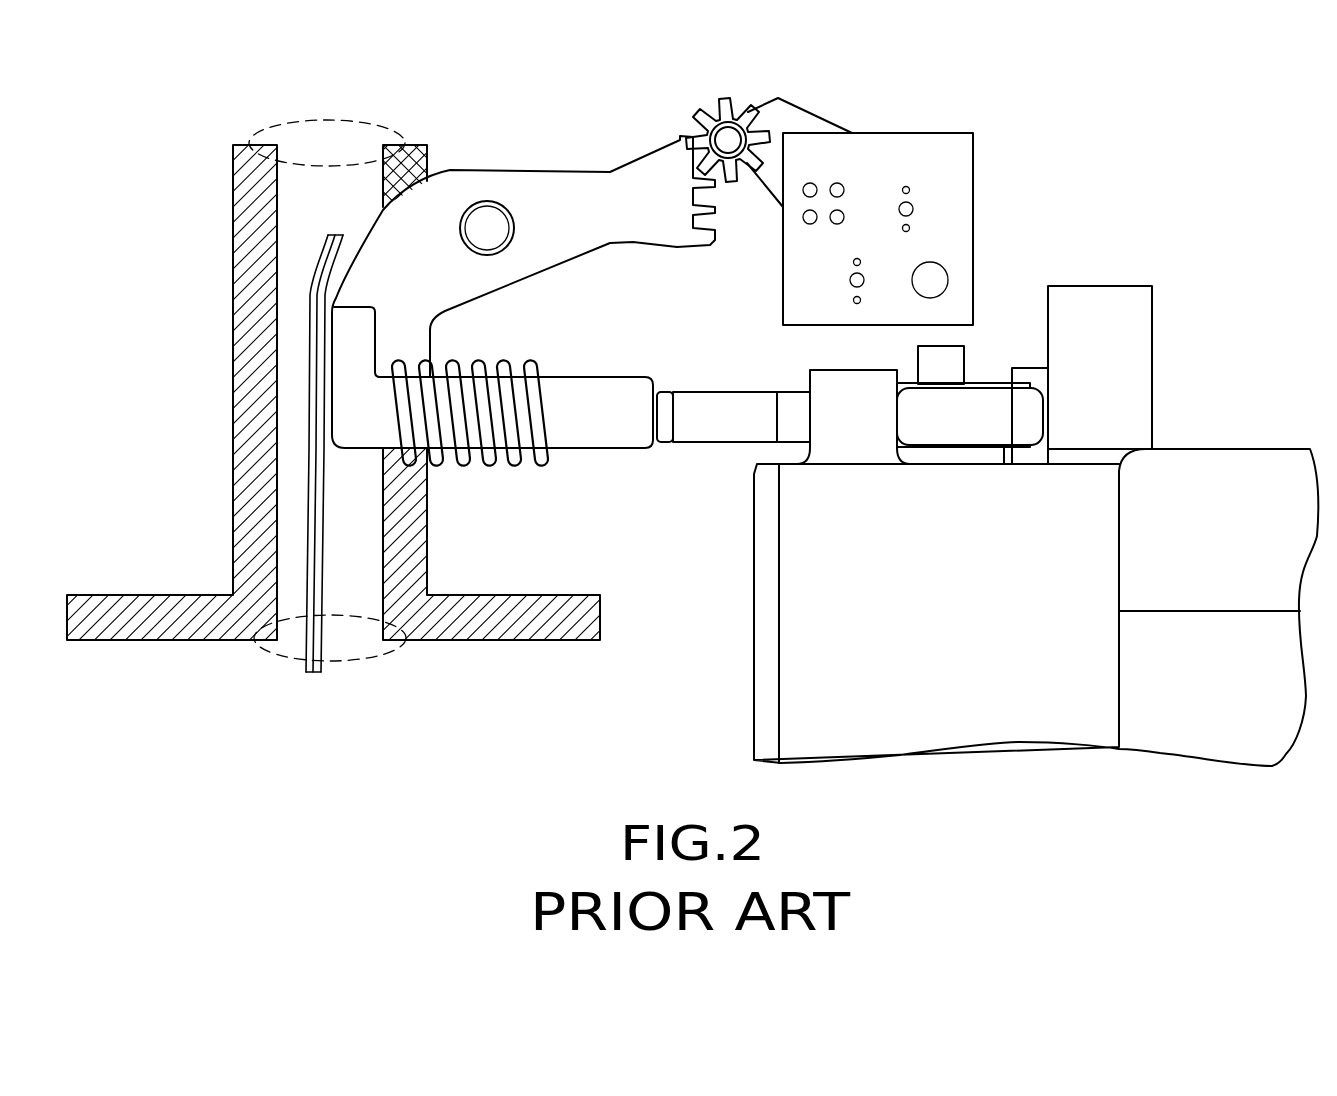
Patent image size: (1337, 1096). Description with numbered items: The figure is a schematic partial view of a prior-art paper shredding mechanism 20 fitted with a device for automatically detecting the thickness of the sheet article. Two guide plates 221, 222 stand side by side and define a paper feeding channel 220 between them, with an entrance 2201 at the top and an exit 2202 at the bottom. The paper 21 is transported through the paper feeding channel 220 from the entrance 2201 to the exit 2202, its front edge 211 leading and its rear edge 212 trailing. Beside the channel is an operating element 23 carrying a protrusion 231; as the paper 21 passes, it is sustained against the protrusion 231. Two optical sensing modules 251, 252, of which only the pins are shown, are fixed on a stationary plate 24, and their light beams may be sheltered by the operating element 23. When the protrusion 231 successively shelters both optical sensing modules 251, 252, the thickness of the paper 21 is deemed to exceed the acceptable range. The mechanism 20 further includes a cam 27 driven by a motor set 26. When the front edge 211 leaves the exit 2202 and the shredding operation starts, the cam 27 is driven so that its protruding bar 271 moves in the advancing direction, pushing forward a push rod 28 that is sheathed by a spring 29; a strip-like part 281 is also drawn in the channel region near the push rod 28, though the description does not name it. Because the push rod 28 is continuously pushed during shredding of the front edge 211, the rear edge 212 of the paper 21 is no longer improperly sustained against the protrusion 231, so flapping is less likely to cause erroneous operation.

The paper shredding mechanism 20 is at (1232, 38).
The paper 21 is at (352, 393).
The front edge 211 is at (270, 632).
The rear edge 212 is at (327, 293).
The paper feeding channel 220 is at (350, 515).
The entrance 2201 is at (337, 110).
The exit 2202 is at (383, 655).
The guide plate 221 is at (253, 530).
The guide plate 222 is at (408, 183).
The operating element 23 is at (548, 185).
The protrusion 231 is at (393, 300).
The stationary plate 24 is at (873, 157).
The optical sensing module 251 is at (907, 207).
The optical sensing module 252 is at (853, 278).
The motor set 26 is at (1060, 506).
The cam 27 is at (987, 417).
The protruding bar 271 is at (757, 418).
The push rod 28 is at (573, 405).
The elastic strip 281 is at (340, 335).
The spring 29 is at (462, 472).